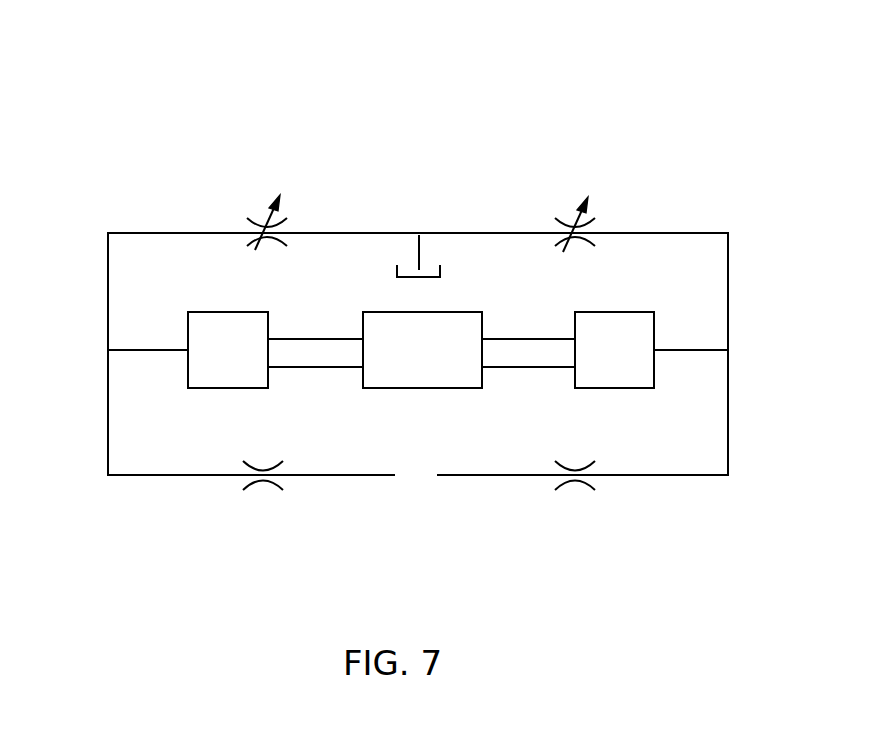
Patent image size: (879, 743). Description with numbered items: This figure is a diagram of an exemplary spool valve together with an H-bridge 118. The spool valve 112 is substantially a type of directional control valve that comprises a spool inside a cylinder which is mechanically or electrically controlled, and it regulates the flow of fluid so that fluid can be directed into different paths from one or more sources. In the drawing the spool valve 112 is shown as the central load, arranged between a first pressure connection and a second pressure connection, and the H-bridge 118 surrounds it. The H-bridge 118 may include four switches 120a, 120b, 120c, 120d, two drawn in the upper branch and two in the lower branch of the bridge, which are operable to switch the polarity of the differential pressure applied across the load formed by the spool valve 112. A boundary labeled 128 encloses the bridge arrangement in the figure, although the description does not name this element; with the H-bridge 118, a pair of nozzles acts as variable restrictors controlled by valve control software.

The H-bridge 118 is at (119, 156).
The housing 128 is at (150, 260).
The spool valve 112 is at (379, 313).
The switch 120a is at (255, 218).
The switch 120b is at (570, 218).
The switch 120c is at (248, 490).
The switch 120d is at (570, 490).